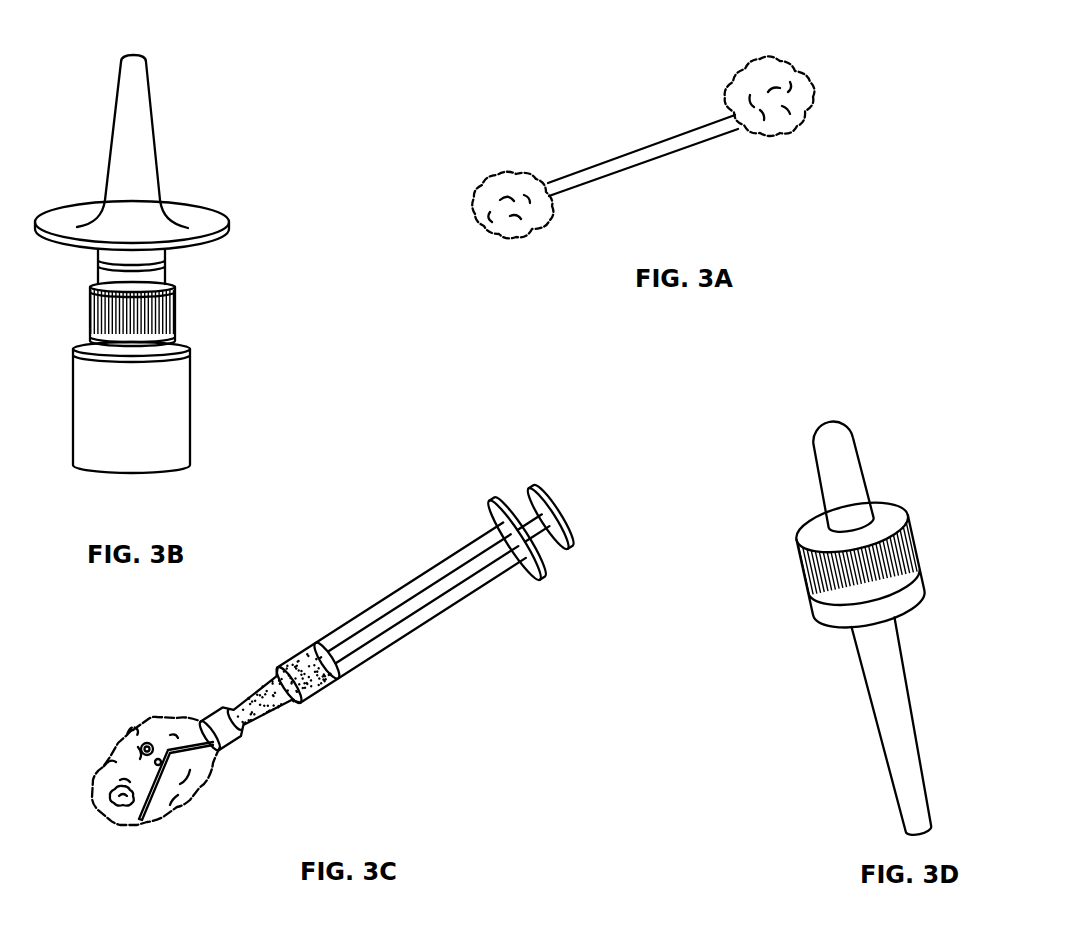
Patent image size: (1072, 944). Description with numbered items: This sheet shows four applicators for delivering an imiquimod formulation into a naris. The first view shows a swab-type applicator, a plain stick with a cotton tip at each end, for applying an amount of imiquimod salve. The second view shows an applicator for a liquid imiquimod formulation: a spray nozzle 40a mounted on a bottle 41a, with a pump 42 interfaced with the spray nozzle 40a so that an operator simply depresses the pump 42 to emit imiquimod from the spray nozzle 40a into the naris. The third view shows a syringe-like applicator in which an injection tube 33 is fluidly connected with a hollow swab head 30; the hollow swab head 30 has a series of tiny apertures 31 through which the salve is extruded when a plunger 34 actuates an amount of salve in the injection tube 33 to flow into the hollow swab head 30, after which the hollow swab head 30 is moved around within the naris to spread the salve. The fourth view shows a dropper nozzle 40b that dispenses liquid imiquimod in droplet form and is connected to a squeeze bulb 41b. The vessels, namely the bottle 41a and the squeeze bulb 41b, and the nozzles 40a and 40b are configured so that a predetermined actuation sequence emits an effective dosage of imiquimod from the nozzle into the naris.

In FIG. 3C, the hollow swab head 30 is at (131, 728).
In FIG. 3C, the tiny apertures 31 is at (147, 742).
In FIG. 3C, the injection tube 33 is at (275, 705).
In FIG. 3C, the plunger 34 is at (571, 531).
In FIG. 3B, the spray nozzle 40a is at (172, 81).
In FIG. 3D, the dropper nozzle 40b is at (948, 826).
In FIG. 3B, the bottle 41a is at (212, 435).
In FIG. 3D, the squeeze bulb 41b is at (901, 455).
In FIG. 3B, the pump 42 is at (220, 260).